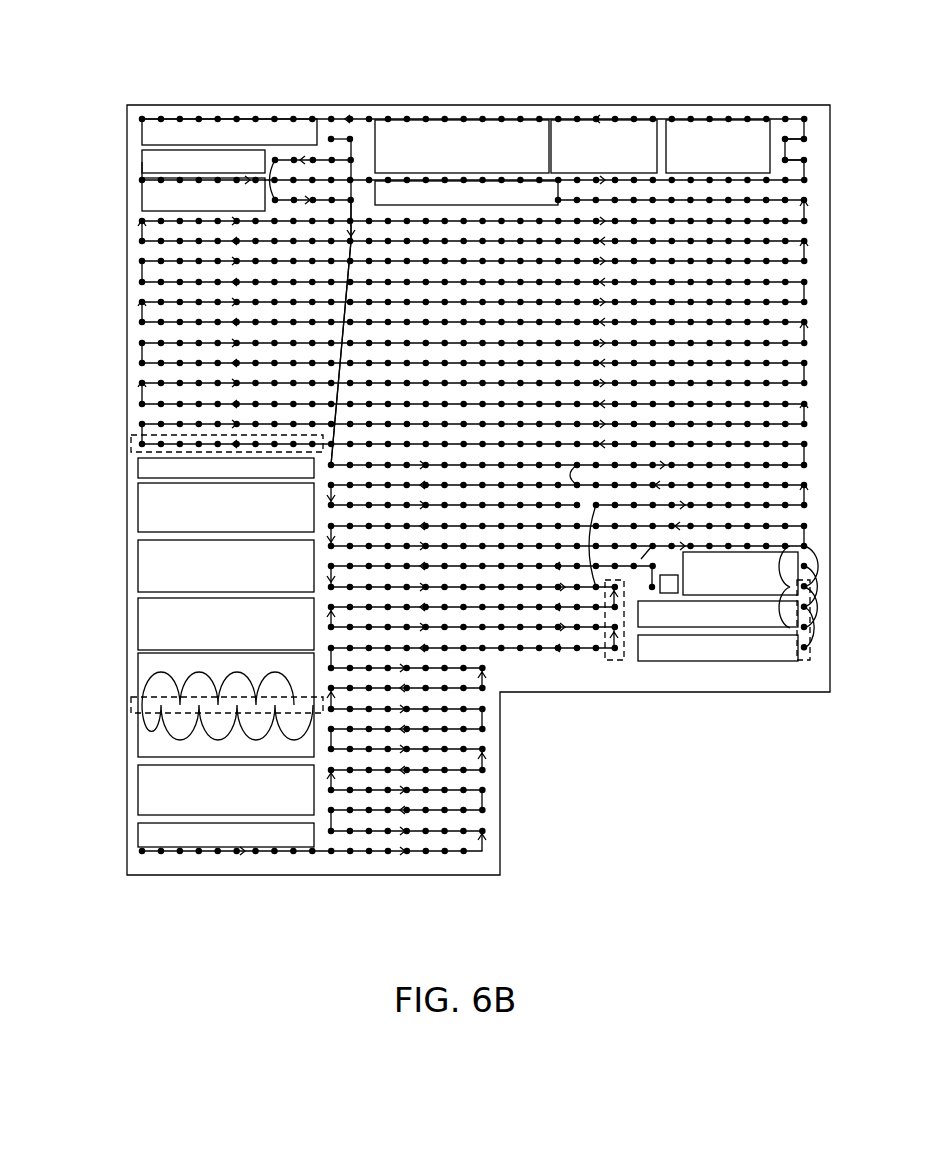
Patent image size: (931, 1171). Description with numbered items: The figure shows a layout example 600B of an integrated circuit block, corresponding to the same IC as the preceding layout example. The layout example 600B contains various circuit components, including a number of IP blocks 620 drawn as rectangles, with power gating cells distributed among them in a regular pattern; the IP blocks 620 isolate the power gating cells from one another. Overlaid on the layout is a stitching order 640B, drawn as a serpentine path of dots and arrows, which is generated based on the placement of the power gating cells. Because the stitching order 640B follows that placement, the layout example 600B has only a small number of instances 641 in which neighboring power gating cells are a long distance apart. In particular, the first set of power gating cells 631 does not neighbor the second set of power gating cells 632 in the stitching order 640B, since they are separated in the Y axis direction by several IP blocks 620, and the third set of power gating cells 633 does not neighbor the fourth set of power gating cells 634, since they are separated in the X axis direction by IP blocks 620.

The layout example 600B is at (639, 53).
The IP blocks 620 is at (172, 160).
The stitching order 640B is at (227, 867).
The instances having long distance between neighboring power gating cells 641 is at (270, 298).
The first set of power gating cells 631 is at (131, 440).
The second set of power gating cells 632 is at (135, 703).
The third set of power gating cells 633 is at (615, 665).
The fourth set of power gating cells 634 is at (803, 665).